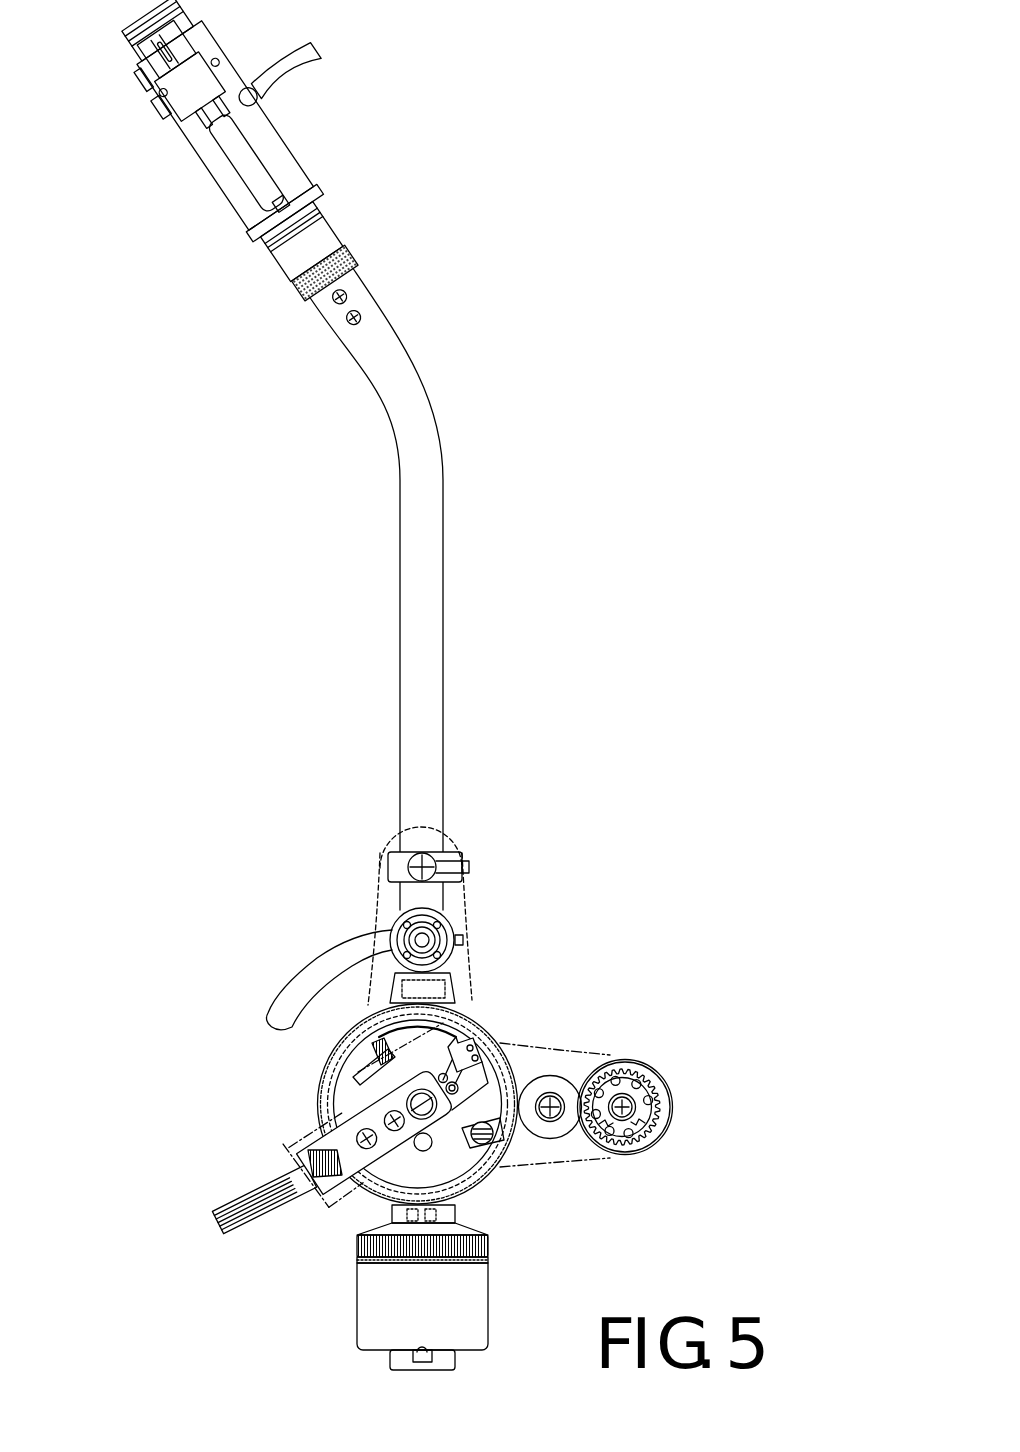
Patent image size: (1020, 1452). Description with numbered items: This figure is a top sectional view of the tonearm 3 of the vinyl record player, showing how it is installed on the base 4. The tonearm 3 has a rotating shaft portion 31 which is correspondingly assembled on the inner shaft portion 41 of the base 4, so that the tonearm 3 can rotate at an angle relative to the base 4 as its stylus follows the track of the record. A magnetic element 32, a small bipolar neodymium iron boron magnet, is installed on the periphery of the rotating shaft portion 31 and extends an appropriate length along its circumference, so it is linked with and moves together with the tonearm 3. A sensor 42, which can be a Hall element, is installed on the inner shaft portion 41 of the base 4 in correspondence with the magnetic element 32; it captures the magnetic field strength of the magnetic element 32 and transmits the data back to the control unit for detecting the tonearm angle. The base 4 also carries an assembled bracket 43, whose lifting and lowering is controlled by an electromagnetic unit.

The tonearm 3 is at (426, 519).
The base 4 is at (553, 1047).
The rotating shaft portion 31 is at (501, 1074).
The inner shaft portion 41 is at (501, 1074).
The magnetic element 32 is at (490, 1004).
The sensor 42 is at (393, 1040).
The bracket 43 is at (316, 967).